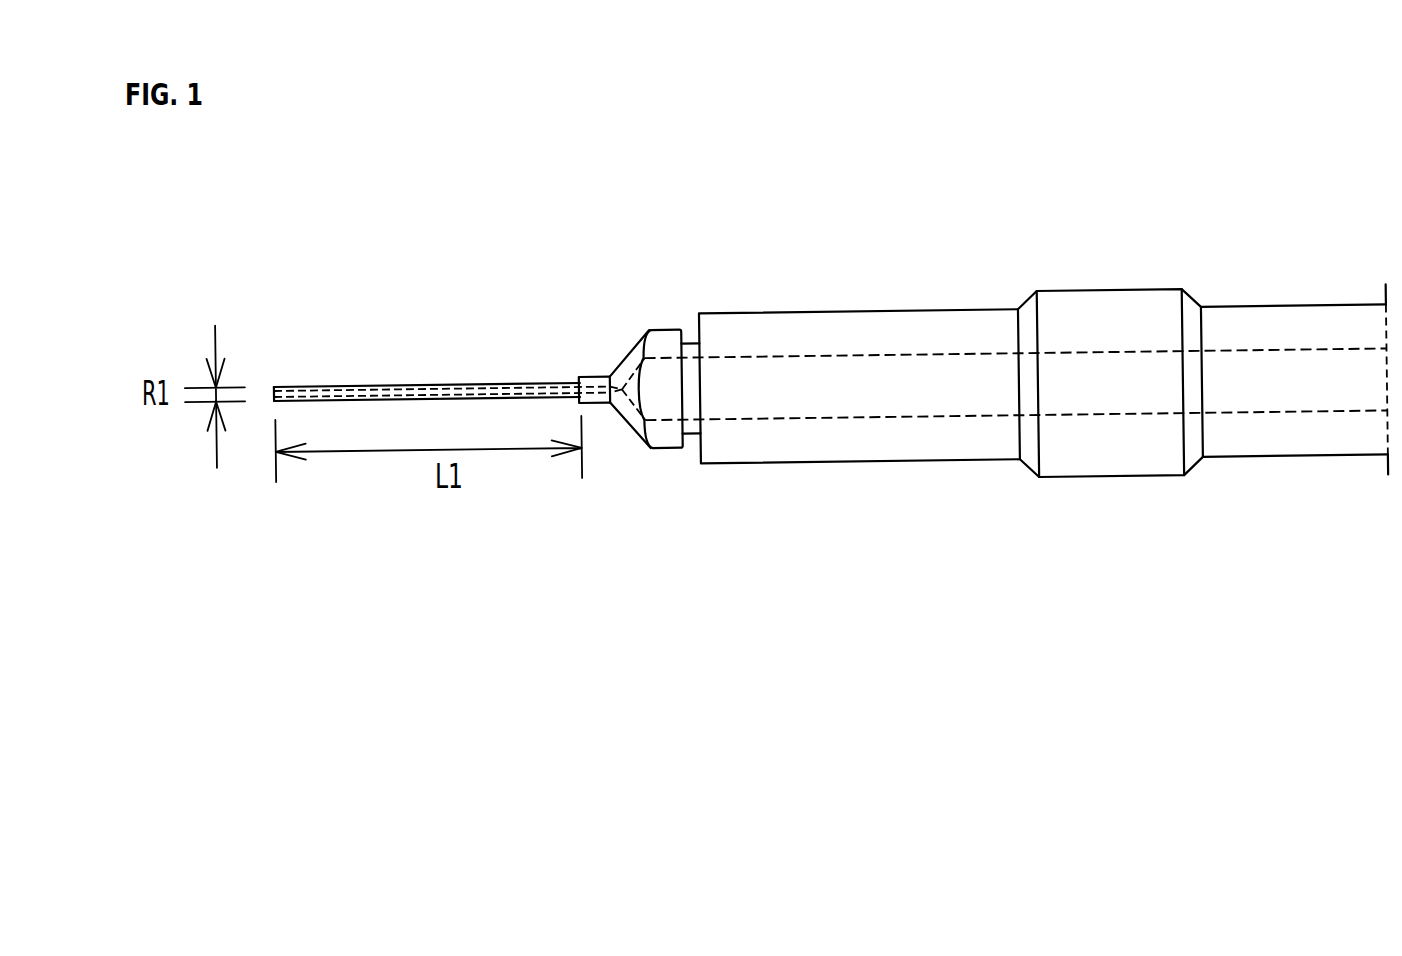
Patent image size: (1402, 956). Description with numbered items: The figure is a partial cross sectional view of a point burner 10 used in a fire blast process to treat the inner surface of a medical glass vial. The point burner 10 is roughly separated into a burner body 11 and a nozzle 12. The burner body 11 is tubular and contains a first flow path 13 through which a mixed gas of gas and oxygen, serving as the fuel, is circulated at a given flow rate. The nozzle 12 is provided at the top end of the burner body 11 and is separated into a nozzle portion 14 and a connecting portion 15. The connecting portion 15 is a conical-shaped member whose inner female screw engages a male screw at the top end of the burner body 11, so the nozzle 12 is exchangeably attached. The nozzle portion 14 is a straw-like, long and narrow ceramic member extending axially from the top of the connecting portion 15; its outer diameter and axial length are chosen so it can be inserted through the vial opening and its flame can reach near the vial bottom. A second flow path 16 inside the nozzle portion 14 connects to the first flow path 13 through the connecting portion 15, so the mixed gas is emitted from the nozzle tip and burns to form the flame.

The point burner 10 is at (786, 415).
The burner body 11 is at (860, 462).
The nozzle 12 is at (442, 339).
The first flow path 13 is at (890, 355).
The nozzle portion 14 is at (418, 383).
The connecting portion 15 is at (628, 357).
The second flow path 16 is at (513, 383).